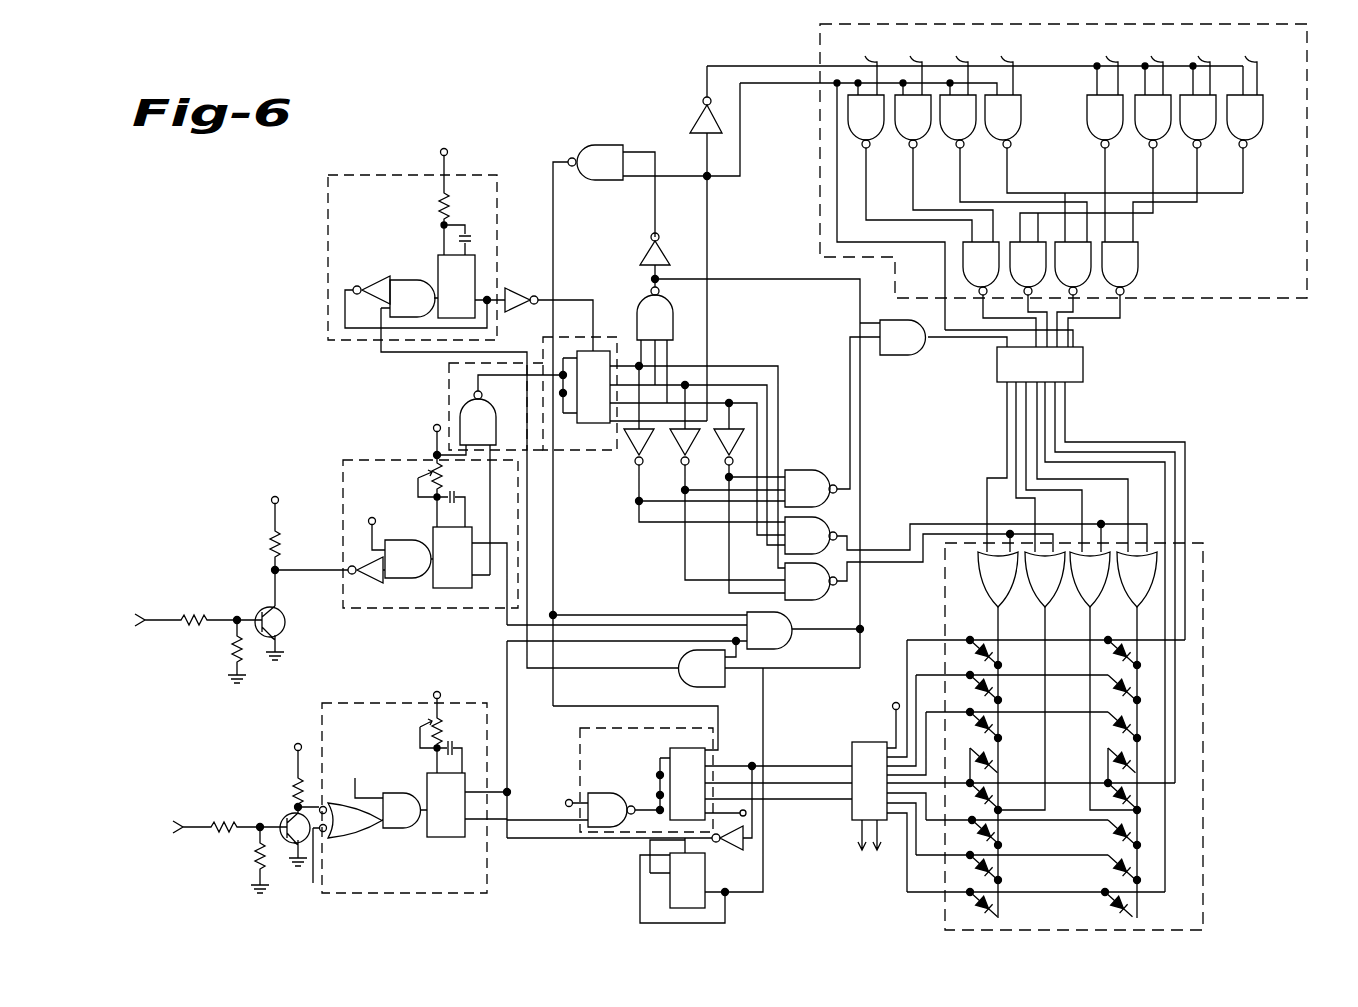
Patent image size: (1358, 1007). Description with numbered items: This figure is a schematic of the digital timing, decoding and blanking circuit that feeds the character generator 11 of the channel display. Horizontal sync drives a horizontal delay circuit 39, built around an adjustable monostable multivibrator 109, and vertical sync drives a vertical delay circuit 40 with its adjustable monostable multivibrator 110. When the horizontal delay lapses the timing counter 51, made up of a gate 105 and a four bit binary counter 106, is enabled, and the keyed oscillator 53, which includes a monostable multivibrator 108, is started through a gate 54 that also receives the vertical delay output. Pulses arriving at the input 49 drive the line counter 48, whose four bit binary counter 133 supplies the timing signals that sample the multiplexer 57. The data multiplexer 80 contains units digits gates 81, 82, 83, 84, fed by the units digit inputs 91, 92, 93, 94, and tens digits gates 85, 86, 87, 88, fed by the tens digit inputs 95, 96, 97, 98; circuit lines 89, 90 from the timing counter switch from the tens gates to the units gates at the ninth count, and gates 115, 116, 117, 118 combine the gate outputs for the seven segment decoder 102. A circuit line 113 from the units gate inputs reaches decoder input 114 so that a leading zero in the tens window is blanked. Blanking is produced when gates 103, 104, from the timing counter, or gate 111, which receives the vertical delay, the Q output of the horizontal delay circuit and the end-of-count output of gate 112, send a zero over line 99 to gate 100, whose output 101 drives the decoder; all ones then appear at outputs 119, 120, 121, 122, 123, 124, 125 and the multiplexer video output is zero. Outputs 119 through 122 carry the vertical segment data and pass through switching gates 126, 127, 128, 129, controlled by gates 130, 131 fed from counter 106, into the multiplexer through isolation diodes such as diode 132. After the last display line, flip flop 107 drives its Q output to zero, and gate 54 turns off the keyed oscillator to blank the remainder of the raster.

The character generator 11 is at (1208, 606).
The horizontal delay circuit 39 is at (334, 510).
The vertical delay circuit 40 is at (378, 696).
The line counter 48 is at (572, 747).
The input 49 is at (556, 541).
The timing counter 51 is at (440, 374).
The keyed oscillator 53 is at (398, 152).
The gate 54 is at (675, 680).
The multiplexer 57 is at (853, 739).
The data multiplexer 80 is at (1325, 115).
The units digit gate 81 is at (883, 141).
The units digit gate 82 is at (930, 141).
The units digit gate 83 is at (978, 141).
The units digit gate 84 is at (1016, 130).
The tens digit gate 85 is at (1092, 140).
The tens digit gate 86 is at (1142, 140).
The tens digit gate 87 is at (1190, 140).
The tens digit gate 88 is at (1235, 143).
The circuit line 89 is at (710, 243).
The circuit line 90 is at (759, 85).
The units digit input 91 is at (856, 67).
The units digit input 92 is at (906, 69).
The units digit input 93 is at (950, 69).
The units digit input 94 is at (996, 69).
The tens digit input 95 is at (1100, 67).
The tens digit input 96 is at (1145, 69).
The tens digit input 97 is at (1193, 69).
The tens digit input 98 is at (1239, 69).
The line 99 is at (862, 488).
The gate 100 is at (906, 358).
The output 101 is at (943, 336).
The seven segment decoder 102 is at (1092, 356).
The gate 103 is at (812, 470).
The gate 104 is at (637, 302).
The gate 105 is at (485, 409).
The four bit binary counter 106 is at (598, 422).
The flip flop 107 is at (670, 879).
The monostable multivibrator 108 is at (440, 268).
The monostable multivibrator 109 is at (443, 580).
The monostable multivibrator 110 is at (430, 785).
The gate 111 is at (789, 640).
The gate 112 is at (600, 148).
The circuit line 113 is at (892, 248).
The input 114 is at (1088, 333).
The gate 115 is at (1004, 274).
The gate 116 is at (1050, 274).
The gate 117 is at (1096, 274).
The gate 118 is at (1138, 272).
The output 119 is at (994, 397).
The output 120 is at (995, 419).
The output 121 is at (1013, 443).
The output 122 is at (1009, 467).
The output 123 is at (1053, 398).
The output 124 is at (1076, 402).
The output 125 is at (1083, 435).
The gate 126 is at (987, 589).
The gate 127 is at (1037, 589).
The gate 128 is at (1084, 592).
The gate 129 is at (1130, 592).
The gate 130 is at (828, 500).
The gate 131 is at (816, 592).
The isolation diode 132 is at (1115, 722).
The counter 133 is at (685, 748).